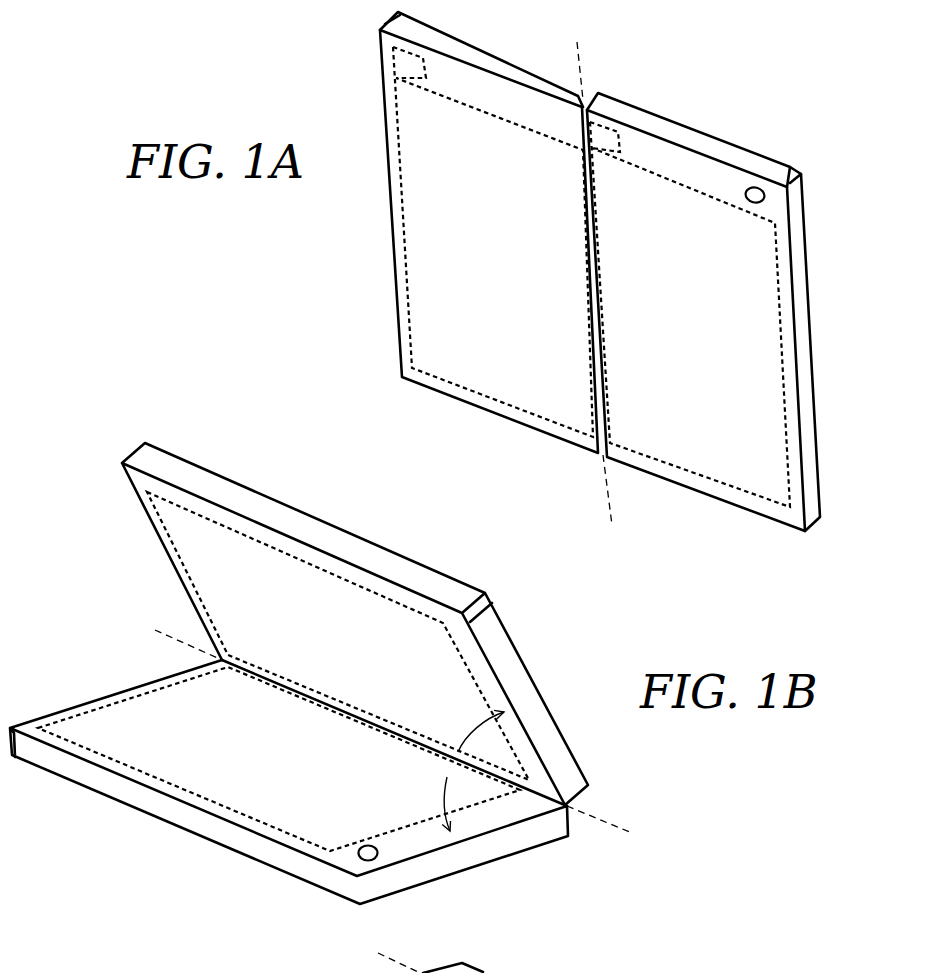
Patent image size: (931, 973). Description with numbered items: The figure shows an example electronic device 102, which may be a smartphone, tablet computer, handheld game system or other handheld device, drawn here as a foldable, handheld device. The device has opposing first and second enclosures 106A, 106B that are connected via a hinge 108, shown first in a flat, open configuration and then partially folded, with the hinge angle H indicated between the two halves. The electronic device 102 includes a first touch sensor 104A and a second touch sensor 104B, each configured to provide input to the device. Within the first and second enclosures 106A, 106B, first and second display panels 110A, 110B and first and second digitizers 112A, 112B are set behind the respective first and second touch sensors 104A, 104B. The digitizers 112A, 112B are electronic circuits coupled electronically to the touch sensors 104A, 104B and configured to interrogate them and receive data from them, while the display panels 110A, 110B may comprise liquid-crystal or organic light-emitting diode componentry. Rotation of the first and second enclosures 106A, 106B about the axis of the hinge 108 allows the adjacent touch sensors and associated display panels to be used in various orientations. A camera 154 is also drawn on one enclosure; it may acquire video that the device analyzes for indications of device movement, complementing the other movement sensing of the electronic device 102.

In FIG. 1A, the electronic device 102 is at (322, 287).
In FIG. 1B, the electronic device 102 is at (87, 641).
In FIG. 1A, the first touch sensor 104A is at (525, 268).
In FIG. 1B, the first touch sensor 104A is at (317, 608).
In FIG. 1A, the second touch sensor 104B is at (720, 343).
In FIG. 1B, the second touch sensor 104B is at (175, 741).
In FIG. 1A, the first enclosure 106A is at (409, 17).
In FIG. 1A, the second enclosure 106B is at (692, 126).
In FIG. 1B, the hinge 108 is at (373, 717).
In FIG. 1B, the first display panel 110A is at (328, 597).
In FIG. 1B, the second display panel 110B is at (177, 758).
In FIG. 1A, the first digitizer 112A is at (425, 64).
In FIG. 1A, the second digitizer 112B is at (620, 138).
In FIG. 1A, the camera 154 is at (767, 197).